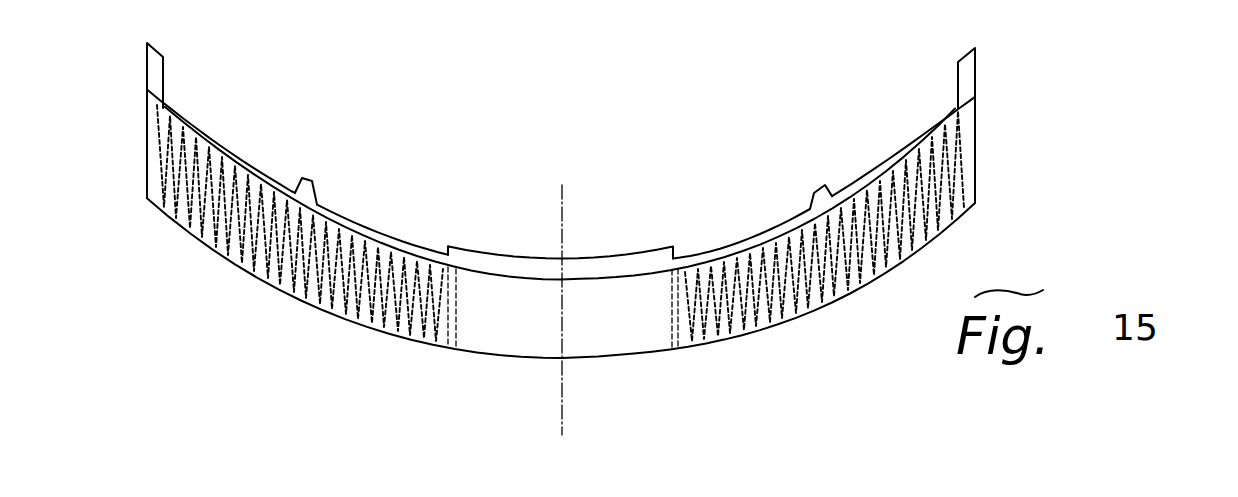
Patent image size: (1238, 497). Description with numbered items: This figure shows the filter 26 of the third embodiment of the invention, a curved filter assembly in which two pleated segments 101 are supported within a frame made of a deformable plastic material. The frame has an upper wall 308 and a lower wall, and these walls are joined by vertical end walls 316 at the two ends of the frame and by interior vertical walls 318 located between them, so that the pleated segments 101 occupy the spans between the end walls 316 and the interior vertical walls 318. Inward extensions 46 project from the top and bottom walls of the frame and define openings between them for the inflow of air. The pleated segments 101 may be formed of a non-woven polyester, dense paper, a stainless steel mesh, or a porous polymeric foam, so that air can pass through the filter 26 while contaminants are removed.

The filter 26 is at (960, 239).
The inward extensions 46 is at (164, 70).
The pleated segments 101 is at (327, 312).
The upper wall 308 is at (350, 243).
The vertical end walls 316 is at (977, 135).
The interior vertical walls 318 is at (458, 336).